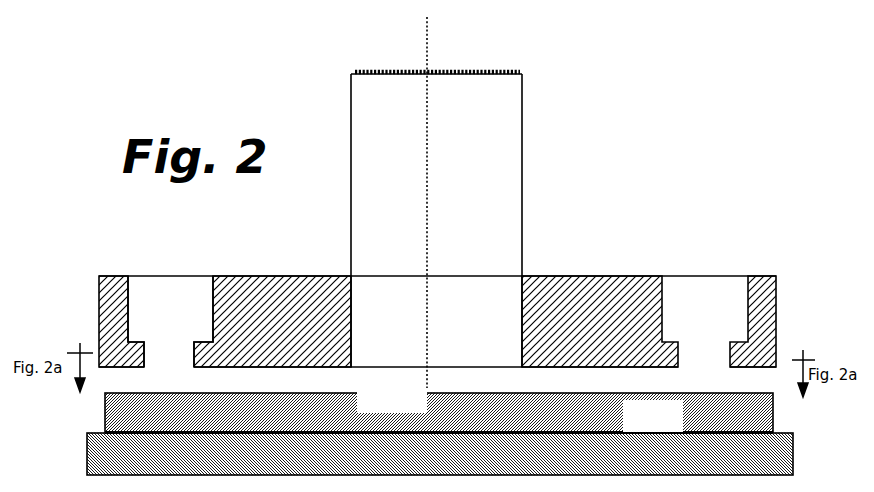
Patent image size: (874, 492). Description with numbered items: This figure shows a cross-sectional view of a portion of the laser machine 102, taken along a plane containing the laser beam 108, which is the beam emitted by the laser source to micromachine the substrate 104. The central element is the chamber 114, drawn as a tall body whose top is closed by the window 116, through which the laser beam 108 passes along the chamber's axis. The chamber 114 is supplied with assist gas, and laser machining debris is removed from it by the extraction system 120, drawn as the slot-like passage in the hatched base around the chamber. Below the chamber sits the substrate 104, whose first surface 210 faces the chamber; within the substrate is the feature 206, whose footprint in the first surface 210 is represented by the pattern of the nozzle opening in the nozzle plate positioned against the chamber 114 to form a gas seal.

The laser machine 102 is at (639, 69).
The substrate 104 is at (676, 427).
The laser beam 108 is at (438, 39).
The chamber 114 is at (530, 187).
The window 116 is at (398, 70).
The extraction system 120 is at (196, 319).
The feature 206 is at (414, 414).
The first surface 210 is at (287, 392).